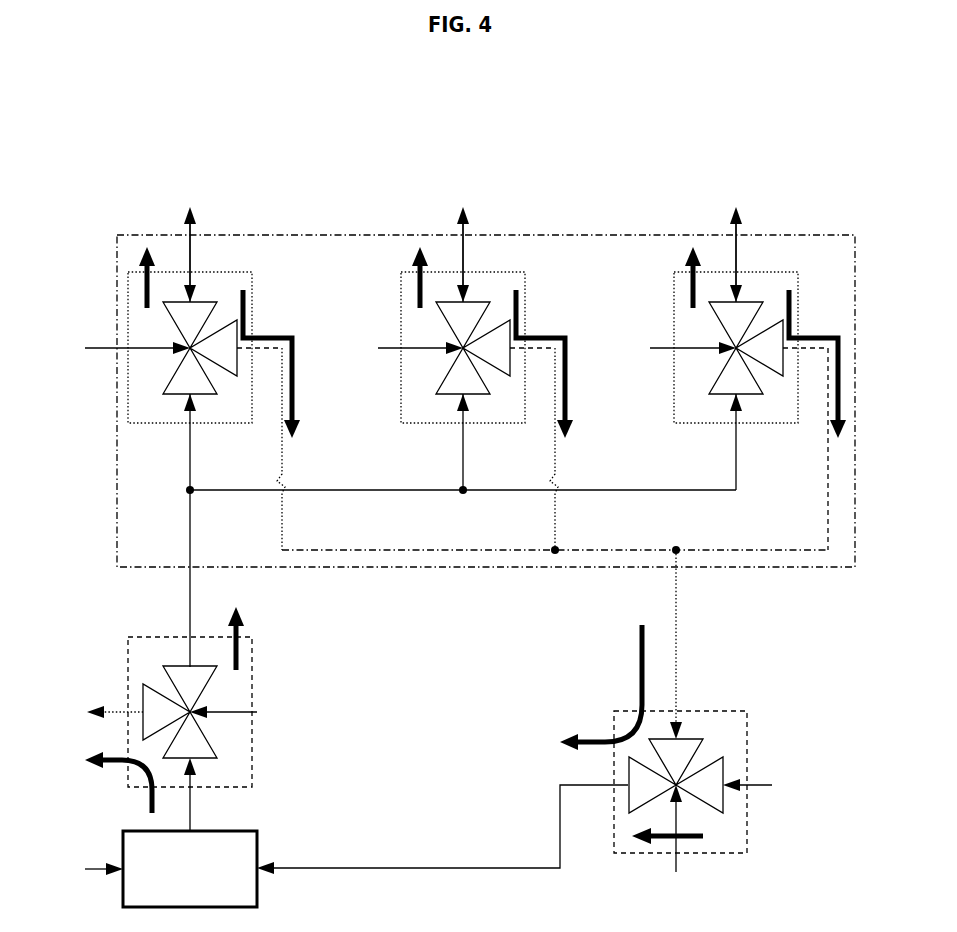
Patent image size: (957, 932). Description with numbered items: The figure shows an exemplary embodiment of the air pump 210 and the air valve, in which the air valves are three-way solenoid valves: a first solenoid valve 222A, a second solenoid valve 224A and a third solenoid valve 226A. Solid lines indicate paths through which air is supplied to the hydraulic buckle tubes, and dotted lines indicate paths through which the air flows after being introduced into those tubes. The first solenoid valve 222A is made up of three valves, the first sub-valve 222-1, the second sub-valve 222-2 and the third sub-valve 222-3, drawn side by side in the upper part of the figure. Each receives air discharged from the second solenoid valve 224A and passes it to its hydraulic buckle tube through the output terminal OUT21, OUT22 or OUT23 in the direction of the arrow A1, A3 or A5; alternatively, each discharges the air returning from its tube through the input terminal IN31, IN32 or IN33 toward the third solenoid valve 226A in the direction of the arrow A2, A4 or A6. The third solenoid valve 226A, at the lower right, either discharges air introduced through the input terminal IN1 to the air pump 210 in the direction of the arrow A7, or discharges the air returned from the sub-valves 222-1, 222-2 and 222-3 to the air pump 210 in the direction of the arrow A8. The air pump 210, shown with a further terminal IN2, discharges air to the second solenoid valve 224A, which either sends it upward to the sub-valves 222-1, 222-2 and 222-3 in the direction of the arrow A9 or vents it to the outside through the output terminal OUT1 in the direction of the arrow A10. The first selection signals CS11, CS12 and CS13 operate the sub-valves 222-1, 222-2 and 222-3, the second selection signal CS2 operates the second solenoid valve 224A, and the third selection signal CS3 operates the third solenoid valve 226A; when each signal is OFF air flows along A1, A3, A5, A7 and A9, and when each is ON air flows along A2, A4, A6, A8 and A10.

The first solenoid valve 222A is at (806, 236).
The 1-1st solenoid valve 222-1 is at (228, 272).
The 1-2nd solenoid valve 222-2 is at (501, 272).
The 1-3rd solenoid valve 222-3 is at (774, 272).
The second solenoid valve 224A is at (128, 637).
The third solenoid valve 226A is at (727, 710).
The air pump 210 is at (205, 830).
The arrow A1 is at (142, 268).
The arrow A2 is at (295, 400).
The arrow A3 is at (417, 268).
The arrow A4 is at (568, 400).
The arrow A5 is at (689, 268).
The arrow A6 is at (841, 400).
The arrow A7 is at (705, 836).
The arrow A8 is at (640, 670).
The arrow A9 is at (240, 631).
The arrow A10 is at (150, 805).
The first selection signal CS11 is at (113, 350).
The first selection signal CS12 is at (397, 350).
The first selection signal CS13 is at (671, 350).
The second selection signal CS2 is at (251, 713).
The third selection signal CS3 is at (674, 843).
The input terminal IN1 is at (763, 786).
The input terminal IN2 is at (87, 870).
The output terminal OUT1 is at (89, 713).
The input terminal IN31 is at (190, 225).
The output terminal OUT21 is at (189, 231).
The input terminal IN32 is at (463, 225).
The output terminal OUT22 is at (462, 231).
The input terminal IN33 is at (736, 225).
The output terminal OUT23 is at (735, 231).